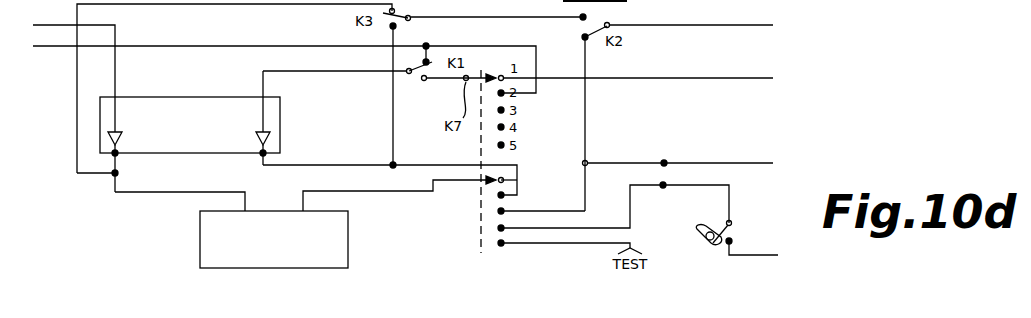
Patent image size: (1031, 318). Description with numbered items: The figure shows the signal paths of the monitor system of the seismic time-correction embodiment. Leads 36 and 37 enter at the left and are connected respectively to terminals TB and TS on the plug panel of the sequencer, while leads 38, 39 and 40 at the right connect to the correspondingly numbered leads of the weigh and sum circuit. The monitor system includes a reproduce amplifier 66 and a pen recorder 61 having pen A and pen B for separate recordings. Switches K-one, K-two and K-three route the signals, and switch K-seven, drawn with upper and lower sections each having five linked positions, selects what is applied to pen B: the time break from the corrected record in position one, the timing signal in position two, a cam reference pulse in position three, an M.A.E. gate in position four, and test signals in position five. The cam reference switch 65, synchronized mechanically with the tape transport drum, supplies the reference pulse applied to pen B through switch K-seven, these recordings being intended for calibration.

The lead 36 is at (58, 25).
The lead 37 is at (58, 48).
The lead 38 is at (720, 26).
The lead 39 is at (720, 77).
The lead 40 is at (718, 162).
The pen recorder 61 is at (348, 240).
The cam reference switch 65 is at (700, 228).
The reproduce amplifier 66 is at (280, 133).